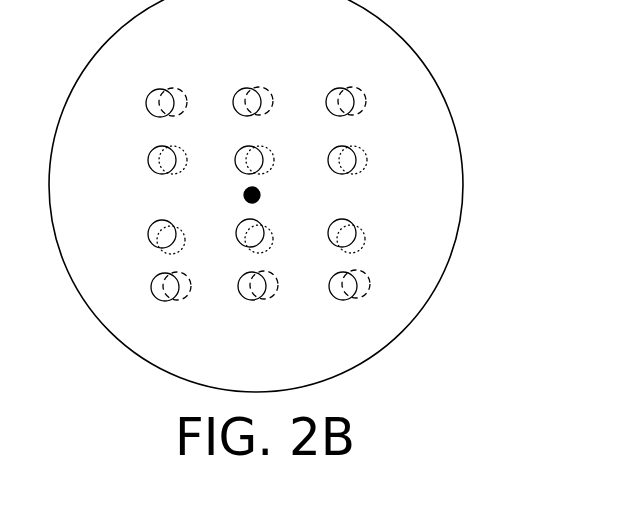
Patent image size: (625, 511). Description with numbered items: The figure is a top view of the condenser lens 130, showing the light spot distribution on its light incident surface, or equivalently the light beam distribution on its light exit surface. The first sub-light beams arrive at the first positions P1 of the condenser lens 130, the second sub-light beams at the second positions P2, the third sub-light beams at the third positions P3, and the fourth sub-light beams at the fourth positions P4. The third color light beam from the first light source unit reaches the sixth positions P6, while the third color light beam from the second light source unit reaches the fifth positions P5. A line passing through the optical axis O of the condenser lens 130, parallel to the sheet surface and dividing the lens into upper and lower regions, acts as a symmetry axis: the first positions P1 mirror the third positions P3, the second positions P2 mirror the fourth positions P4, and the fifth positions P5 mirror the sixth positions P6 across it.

The condenser lens 130 is at (551, 386).
The optical axis O is at (260, 194).
The first positions P1 is at (154, 91).
The second positions P2 is at (186, 300).
The third positions P3 is at (240, 226).
The fourth positions P4 is at (176, 88).
The fifth positions P5 is at (180, 156).
The sixth positions P6 is at (180, 233).